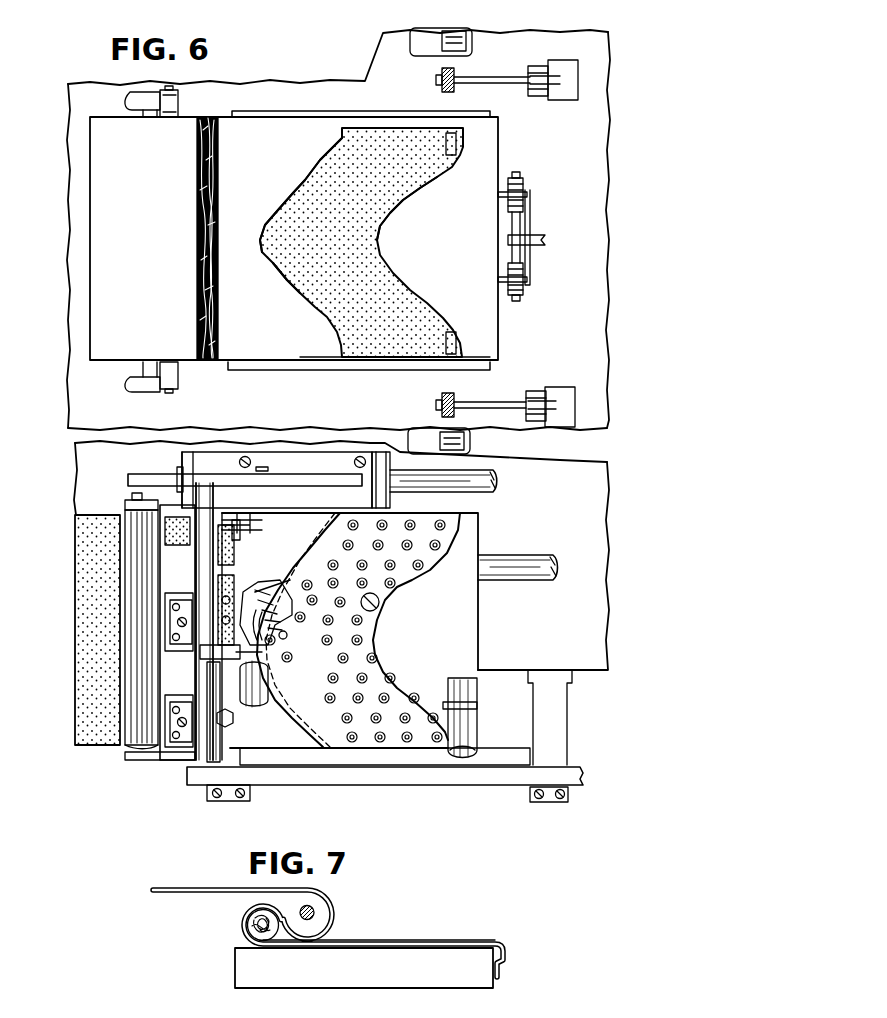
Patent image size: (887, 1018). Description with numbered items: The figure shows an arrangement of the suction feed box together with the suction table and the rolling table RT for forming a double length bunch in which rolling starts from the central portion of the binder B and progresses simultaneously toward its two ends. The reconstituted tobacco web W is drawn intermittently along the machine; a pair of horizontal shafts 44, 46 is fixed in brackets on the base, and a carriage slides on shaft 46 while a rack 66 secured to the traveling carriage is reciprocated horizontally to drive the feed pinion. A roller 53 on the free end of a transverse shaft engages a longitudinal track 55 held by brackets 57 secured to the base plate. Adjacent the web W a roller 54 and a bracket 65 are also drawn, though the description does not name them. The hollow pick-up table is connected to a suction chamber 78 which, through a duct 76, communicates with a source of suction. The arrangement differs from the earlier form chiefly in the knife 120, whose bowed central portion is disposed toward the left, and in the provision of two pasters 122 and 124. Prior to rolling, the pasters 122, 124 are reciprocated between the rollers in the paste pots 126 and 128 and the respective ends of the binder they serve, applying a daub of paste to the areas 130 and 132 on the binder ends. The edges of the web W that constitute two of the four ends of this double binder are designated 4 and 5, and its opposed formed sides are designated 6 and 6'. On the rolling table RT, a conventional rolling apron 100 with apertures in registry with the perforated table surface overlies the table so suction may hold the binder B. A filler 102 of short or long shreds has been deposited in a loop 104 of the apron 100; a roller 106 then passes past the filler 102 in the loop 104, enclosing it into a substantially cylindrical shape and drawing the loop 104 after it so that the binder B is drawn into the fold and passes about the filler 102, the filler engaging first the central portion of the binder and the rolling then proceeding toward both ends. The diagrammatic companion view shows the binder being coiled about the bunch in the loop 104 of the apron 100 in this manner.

In FIG. 6, the edge of the web 4 is at (386, 132).
In FIG. 6, the edge of the web 5 is at (397, 358).
In FIG. 6, the formed side of the binder 6 is at (301, 195).
In FIG. 6, the formed side of the binder 6' is at (407, 208).
In FIG. 6, the horizontal shaft 44 is at (543, 556).
In FIG. 6, the horizontal shaft 46 is at (497, 487).
In FIG. 6, the roller 53 is at (196, 766).
In FIG. 6, the roller 54 is at (122, 740).
In FIG. 6, the longitudinal track 55 is at (512, 782).
In FIG. 6, the bracket 57 is at (567, 727).
In FIG. 6, the bracket 65 is at (160, 758).
In FIG. 6, the rack 66 is at (152, 482).
In FIG. 6, the duct 76 is at (477, 714).
In FIG. 6, the suction chamber 78 is at (478, 629).
In FIG. 6, the rolling apron 100 is at (490, 332).
In FIG. 7, the rolling apron 100 is at (492, 948).
In FIG. 7, the filler 102 is at (250, 934).
In FIG. 6, the loop 104 is at (198, 130).
In FIG. 7, the loop 104 is at (247, 917).
In FIG. 6, the roller 106 is at (180, 108).
In FIG. 7, the roller 106 is at (322, 908).
In FIG. 6, the knife 120 is at (278, 584).
In FIG. 6, the paster 122 is at (454, 400).
In FIG. 6, the paster 124 is at (456, 88).
In FIG. 6, the paste pot 126 is at (428, 430).
In FIG. 6, the paste pot 128 is at (428, 48).
In FIG. 6, the paste area 130 is at (452, 332).
In FIG. 6, the paste area 132 is at (456, 143).
In FIG. 6, the binder B is at (300, 293).
In FIG. 7, the binder B is at (434, 942).
In FIG. 6, the rolling table RT is at (275, 107).
In FIG. 7, the rolling table RT is at (345, 925).
In FIG. 6, the reconstituted tobacco web W is at (77, 712).